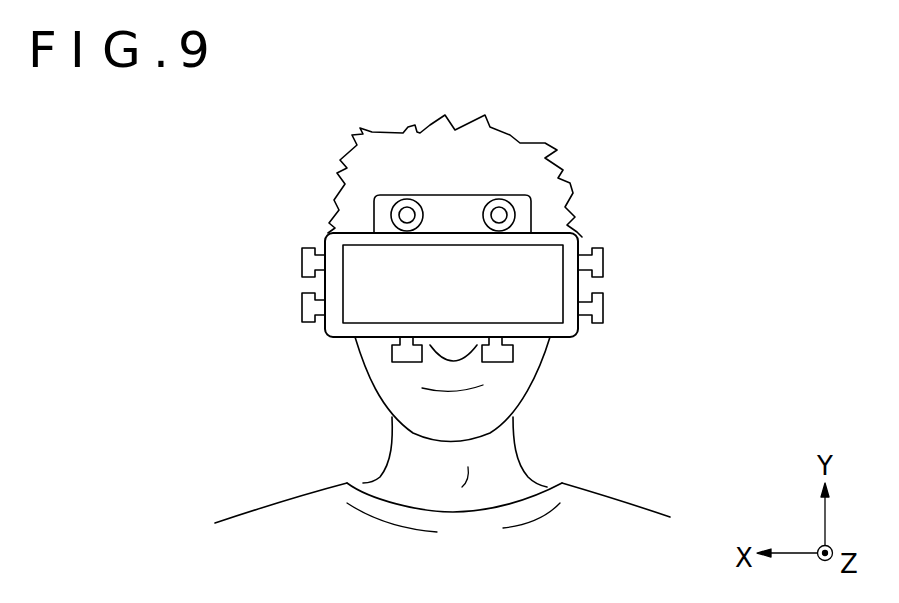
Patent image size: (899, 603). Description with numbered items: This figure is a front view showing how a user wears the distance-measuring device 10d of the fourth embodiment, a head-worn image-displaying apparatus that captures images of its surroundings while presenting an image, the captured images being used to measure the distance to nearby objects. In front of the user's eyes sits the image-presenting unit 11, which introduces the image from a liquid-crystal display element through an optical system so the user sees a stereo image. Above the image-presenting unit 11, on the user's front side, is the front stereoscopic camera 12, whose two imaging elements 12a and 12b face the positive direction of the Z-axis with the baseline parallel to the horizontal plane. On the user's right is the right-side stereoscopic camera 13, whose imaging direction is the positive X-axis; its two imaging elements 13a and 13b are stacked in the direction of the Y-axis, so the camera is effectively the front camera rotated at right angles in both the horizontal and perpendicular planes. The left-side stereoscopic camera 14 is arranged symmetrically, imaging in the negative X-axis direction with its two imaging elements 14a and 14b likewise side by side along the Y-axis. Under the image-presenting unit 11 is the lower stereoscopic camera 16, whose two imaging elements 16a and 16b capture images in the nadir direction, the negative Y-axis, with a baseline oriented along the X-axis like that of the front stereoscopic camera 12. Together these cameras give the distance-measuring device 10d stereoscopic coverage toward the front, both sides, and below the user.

The distance-measuring device 10d is at (628, 191).
The image-presenting unit 11 is at (535, 305).
The front stereoscopic camera 12 is at (533, 72).
The imaging element 12a is at (391, 199).
The imaging element 12b is at (486, 198).
The right-side stereoscopic camera 13 is at (216, 245).
The imaging element 13a is at (298, 263).
The imaging element 13b is at (297, 312).
The left-side stereoscopic camera 14 is at (688, 243).
The imaging element 14a is at (605, 255).
The imaging element 14b is at (605, 305).
The lower stereoscopic camera 16 is at (274, 352).
The imaging element 16a is at (390, 353).
The imaging element 16b is at (480, 362).